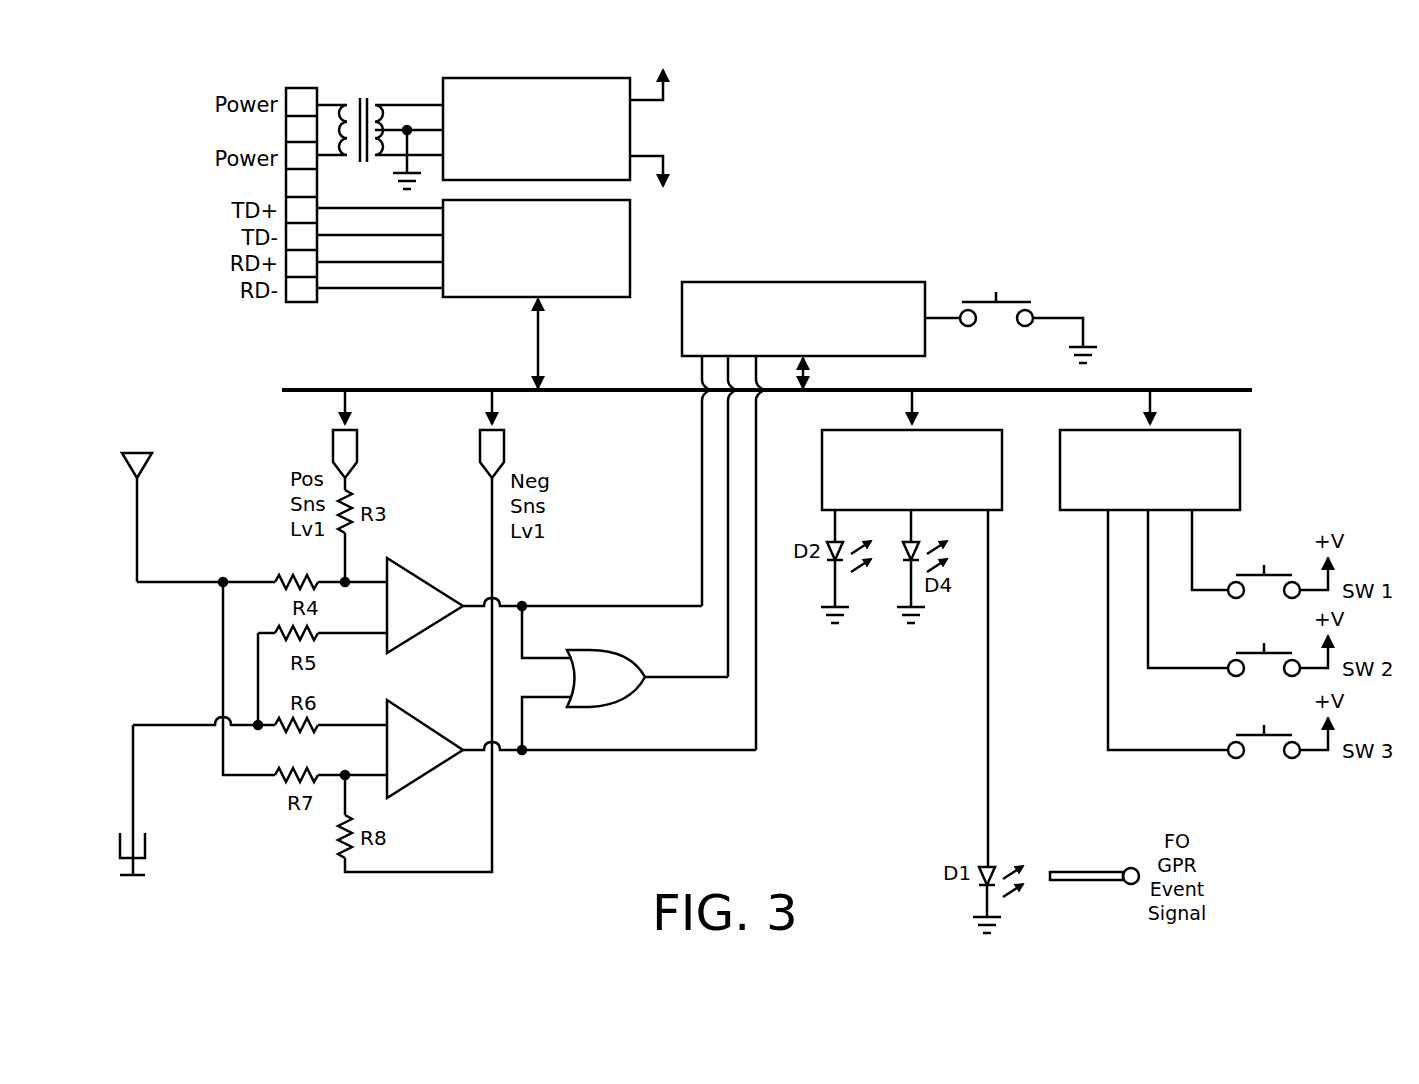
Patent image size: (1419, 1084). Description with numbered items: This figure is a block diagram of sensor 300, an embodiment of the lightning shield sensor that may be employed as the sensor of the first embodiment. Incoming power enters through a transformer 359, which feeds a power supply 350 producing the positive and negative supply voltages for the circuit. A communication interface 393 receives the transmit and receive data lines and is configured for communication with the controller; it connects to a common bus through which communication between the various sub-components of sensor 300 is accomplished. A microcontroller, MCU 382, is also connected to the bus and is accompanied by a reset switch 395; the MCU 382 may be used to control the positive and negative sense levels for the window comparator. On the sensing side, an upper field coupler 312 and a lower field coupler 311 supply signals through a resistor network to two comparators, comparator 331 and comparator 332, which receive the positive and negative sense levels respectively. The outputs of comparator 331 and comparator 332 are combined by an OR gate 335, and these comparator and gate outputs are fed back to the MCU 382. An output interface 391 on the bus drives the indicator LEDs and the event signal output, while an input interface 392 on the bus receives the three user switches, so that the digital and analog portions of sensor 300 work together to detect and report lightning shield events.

The sensor 300 is at (833, 79).
The power supply 350 is at (530, 78).
The transformer 359 is at (376, 105).
The communication interface 393 is at (587, 298).
The microcontroller (MCU) 382 is at (805, 282).
The reset switch 395 is at (1035, 311).
The output interface 391 is at (955, 430).
The input interface 392 is at (1240, 478).
The upper field coupler 312 is at (137, 513).
The lower field coupler 311 is at (133, 802).
The comparator 331 is at (405, 648).
The comparator 332 is at (407, 796).
The OR gate 335 is at (599, 651).